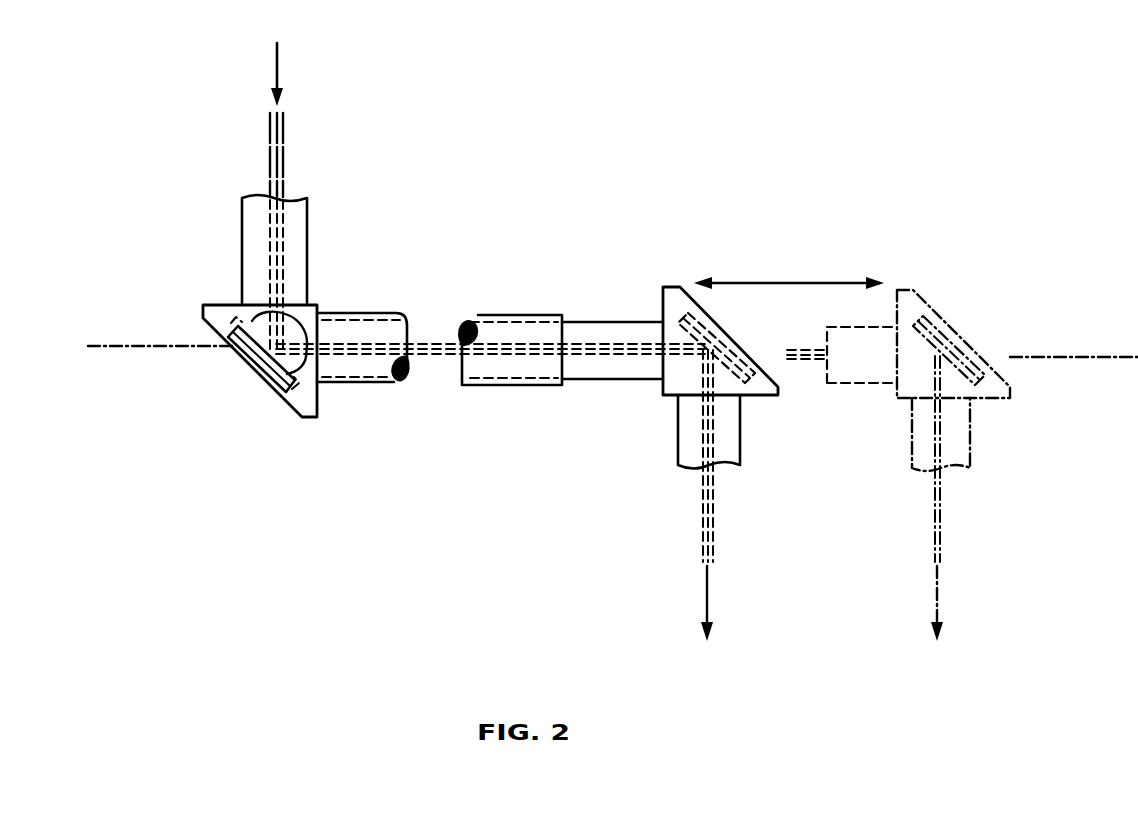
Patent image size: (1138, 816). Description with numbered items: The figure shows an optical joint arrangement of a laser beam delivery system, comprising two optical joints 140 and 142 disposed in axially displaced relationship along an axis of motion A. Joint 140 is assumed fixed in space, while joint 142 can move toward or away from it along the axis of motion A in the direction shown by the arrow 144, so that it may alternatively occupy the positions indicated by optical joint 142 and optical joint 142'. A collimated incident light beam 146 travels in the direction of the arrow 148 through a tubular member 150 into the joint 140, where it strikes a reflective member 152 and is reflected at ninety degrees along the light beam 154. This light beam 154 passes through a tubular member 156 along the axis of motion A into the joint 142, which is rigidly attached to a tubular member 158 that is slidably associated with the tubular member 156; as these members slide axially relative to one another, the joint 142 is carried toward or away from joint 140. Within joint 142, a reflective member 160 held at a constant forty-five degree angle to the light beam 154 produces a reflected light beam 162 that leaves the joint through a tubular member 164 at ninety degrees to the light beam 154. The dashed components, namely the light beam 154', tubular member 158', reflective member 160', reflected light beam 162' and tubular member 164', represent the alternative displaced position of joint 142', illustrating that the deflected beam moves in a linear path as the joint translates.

The optical joint 140 is at (205, 316).
The optical joint 142 is at (732, 362).
The optical joint (alternative position) 142' is at (972, 366).
The arrow 144 is at (819, 285).
The collimated incident light beam 146 is at (284, 157).
The arrow 148 is at (281, 72).
The tubular member 150 is at (307, 228).
The reflective member 152 is at (258, 376).
The light beam 154 is at (512, 372).
The light beam (alternative position) 154' is at (792, 341).
The tubular member 156 is at (378, 386).
The tubular member 158 is at (612, 379).
The tubular member (alternative position) 158' is at (862, 382).
The reflective member 160 is at (716, 340).
The reflective member (alternative position) 160' is at (961, 343).
The reflected light beam 162 is at (675, 495).
The reflected light beam (alternative position) 162' is at (967, 498).
The tubular member 164 is at (681, 439).
The tubular member (alternative position) 164' is at (911, 447).
The axis of motion A is at (147, 348).